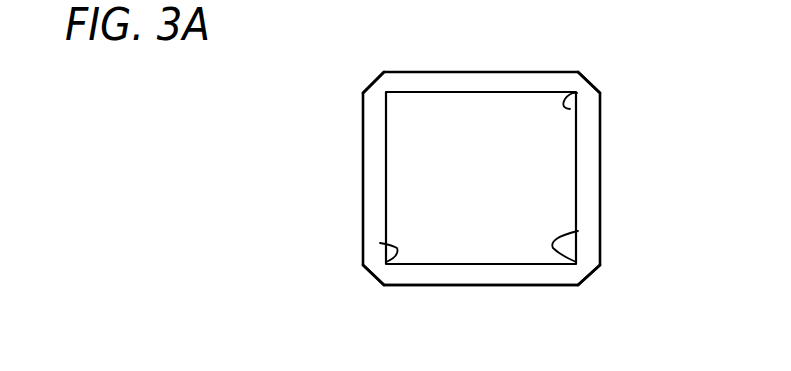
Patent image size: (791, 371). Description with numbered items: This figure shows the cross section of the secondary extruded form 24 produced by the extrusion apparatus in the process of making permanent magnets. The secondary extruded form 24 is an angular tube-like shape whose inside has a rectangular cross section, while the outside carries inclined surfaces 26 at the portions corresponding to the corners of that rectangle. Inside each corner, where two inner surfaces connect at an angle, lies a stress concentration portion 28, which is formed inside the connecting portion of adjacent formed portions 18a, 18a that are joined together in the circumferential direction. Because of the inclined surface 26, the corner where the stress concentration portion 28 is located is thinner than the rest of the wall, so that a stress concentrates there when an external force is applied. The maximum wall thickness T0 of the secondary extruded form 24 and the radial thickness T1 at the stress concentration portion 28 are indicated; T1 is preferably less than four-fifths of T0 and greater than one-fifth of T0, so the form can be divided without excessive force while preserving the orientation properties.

The formed portion 18a is at (518, 72).
The inclined surface 26 is at (593, 80).
The stress concentration portion 28 is at (570, 109).
The secondary extruded form 24 is at (527, 286).
The maximum thickness T0 is at (443, 102).
The thickness at the stress concentration portion T1 is at (396, 97).